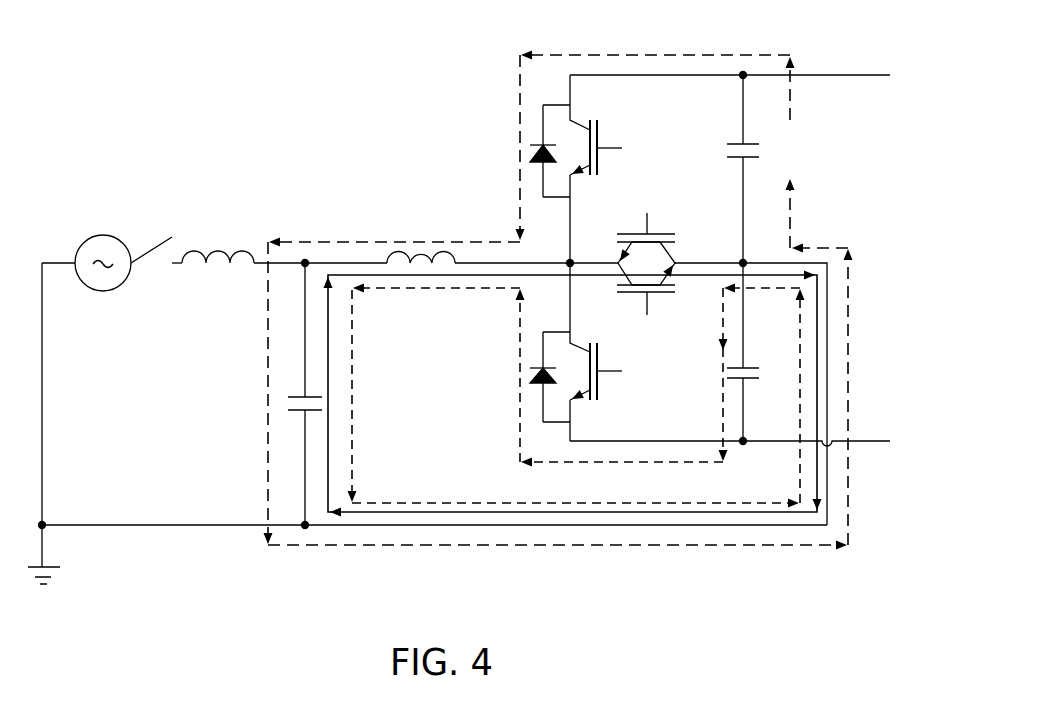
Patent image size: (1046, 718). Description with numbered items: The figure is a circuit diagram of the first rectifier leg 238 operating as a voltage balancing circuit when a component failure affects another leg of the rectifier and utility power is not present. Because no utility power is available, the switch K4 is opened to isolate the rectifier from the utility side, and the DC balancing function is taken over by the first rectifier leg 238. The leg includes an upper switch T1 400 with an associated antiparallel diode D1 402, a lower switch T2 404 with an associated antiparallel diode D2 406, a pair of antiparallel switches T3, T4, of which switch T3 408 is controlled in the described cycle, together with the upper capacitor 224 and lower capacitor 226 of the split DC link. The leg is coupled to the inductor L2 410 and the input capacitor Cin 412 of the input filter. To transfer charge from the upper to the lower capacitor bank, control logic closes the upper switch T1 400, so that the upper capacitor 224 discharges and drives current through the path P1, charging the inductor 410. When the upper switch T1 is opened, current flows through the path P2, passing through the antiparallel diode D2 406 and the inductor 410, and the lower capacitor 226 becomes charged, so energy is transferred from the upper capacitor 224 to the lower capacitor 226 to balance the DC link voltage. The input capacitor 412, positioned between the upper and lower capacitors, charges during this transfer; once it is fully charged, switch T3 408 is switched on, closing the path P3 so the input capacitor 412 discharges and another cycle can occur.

The first rectifier leg 238 is at (213, 58).
The switch K4 is at (151, 231).
The inductor (L2) 410 is at (418, 250).
The input capacitor (Cin) 412 is at (298, 392).
The upper switch (T1) 400 is at (597, 126).
The antiparallel diode (D1) 402 is at (541, 125).
The lower switch (T2) 404 is at (598, 392).
The antiparallel diode (D2) 406 is at (530, 374).
The switch (T3) 408 is at (627, 294).
The upper capacitor 224 is at (735, 142).
The lower capacitor 226 is at (752, 366).
The upper switch T1 is at (623, 147).
The lower switch T2 is at (622, 371).
The antiparallel switch T3 is at (648, 319).
The antiparallel switch T4 is at (646, 207).
The path P1 is at (795, 108).
The path P2 is at (805, 322).
The path P3 is at (820, 390).